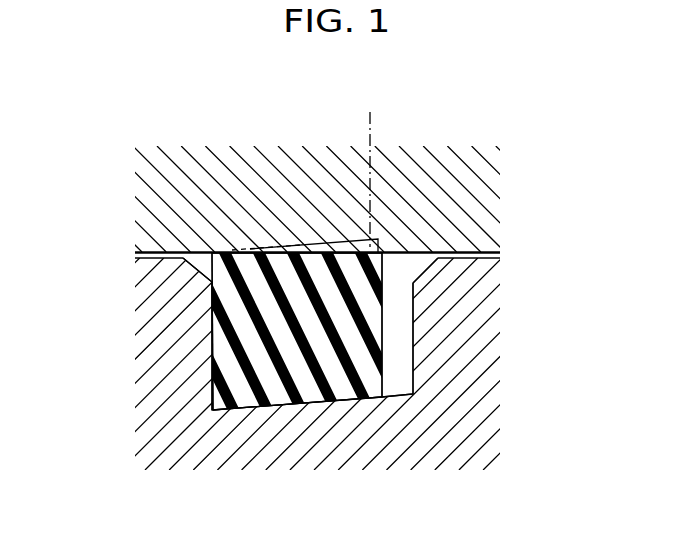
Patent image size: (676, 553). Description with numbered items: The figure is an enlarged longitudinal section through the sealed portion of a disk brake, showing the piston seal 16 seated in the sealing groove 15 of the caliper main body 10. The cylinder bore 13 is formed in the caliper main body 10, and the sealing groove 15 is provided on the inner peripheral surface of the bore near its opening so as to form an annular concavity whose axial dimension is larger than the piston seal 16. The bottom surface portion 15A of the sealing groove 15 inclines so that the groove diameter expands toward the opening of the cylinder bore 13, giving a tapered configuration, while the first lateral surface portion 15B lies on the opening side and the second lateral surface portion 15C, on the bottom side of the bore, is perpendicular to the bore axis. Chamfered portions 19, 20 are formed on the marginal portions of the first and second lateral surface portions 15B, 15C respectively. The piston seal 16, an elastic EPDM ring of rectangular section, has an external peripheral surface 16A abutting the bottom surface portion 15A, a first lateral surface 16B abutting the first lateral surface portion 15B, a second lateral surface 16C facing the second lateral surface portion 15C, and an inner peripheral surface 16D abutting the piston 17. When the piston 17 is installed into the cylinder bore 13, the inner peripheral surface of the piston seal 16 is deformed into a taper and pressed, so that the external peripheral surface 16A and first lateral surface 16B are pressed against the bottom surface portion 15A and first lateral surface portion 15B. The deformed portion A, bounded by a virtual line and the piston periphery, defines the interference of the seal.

The caliper main body 10 is at (465, 428).
The piston 17 is at (393, 175).
The piston seal 16 is at (313, 285).
The external peripheral surface 16A is at (298, 404).
The first lateral surface 16B is at (210, 317).
The second lateral surface 16C is at (383, 326).
The inner peripheral surface 16D is at (297, 246).
The sealing groove 15 is at (398, 350).
The bottom surface portion 15A is at (400, 392).
The first lateral surface portion 15B is at (248, 251).
The second lateral surface portion 15C is at (413, 298).
The cylinder bore 13 is at (472, 252).
The chamfered portion 19 is at (195, 252).
The chamfered portion 20 is at (424, 257).
The portion surrounded by a virtual line and the external periphery of the piston A is at (372, 161).